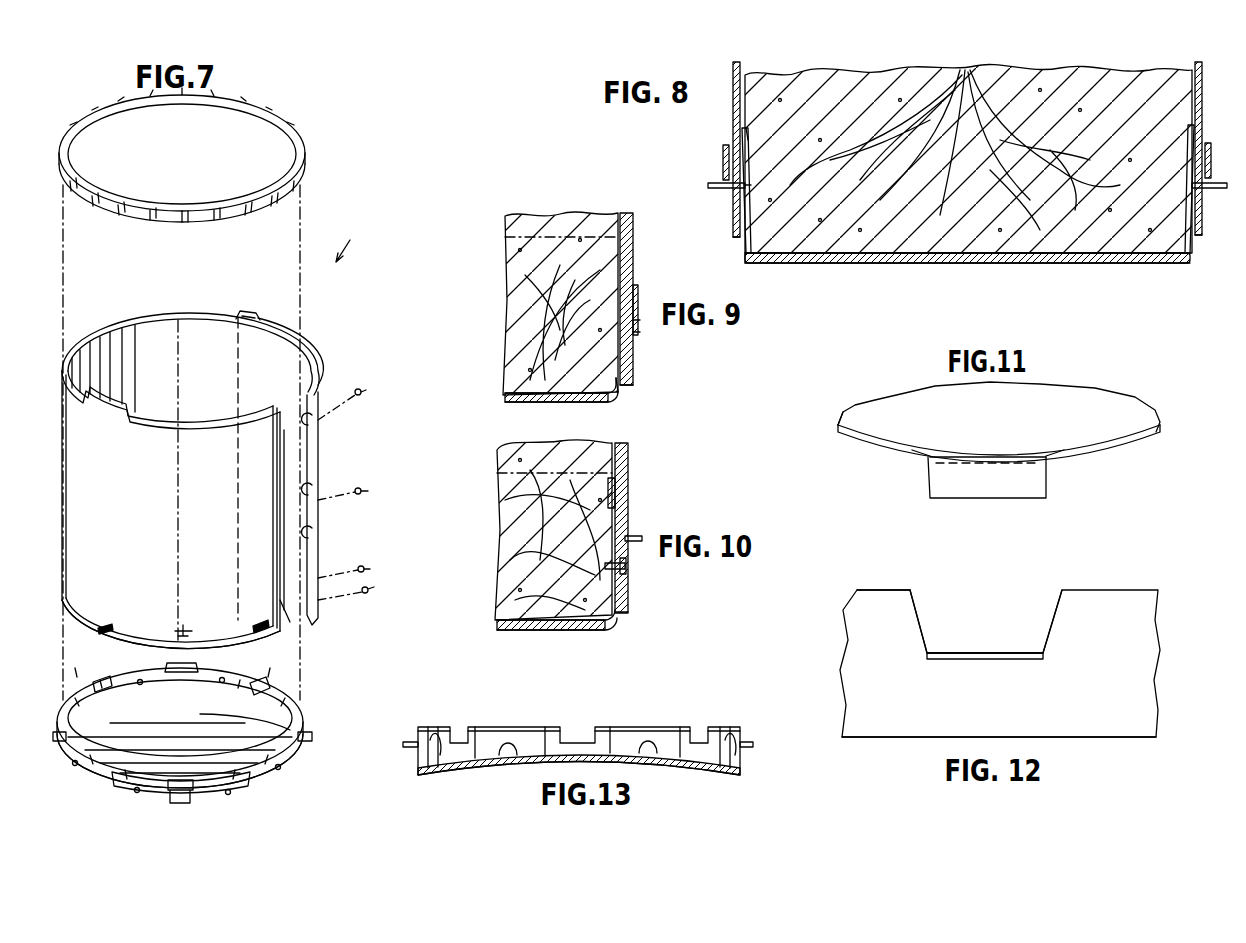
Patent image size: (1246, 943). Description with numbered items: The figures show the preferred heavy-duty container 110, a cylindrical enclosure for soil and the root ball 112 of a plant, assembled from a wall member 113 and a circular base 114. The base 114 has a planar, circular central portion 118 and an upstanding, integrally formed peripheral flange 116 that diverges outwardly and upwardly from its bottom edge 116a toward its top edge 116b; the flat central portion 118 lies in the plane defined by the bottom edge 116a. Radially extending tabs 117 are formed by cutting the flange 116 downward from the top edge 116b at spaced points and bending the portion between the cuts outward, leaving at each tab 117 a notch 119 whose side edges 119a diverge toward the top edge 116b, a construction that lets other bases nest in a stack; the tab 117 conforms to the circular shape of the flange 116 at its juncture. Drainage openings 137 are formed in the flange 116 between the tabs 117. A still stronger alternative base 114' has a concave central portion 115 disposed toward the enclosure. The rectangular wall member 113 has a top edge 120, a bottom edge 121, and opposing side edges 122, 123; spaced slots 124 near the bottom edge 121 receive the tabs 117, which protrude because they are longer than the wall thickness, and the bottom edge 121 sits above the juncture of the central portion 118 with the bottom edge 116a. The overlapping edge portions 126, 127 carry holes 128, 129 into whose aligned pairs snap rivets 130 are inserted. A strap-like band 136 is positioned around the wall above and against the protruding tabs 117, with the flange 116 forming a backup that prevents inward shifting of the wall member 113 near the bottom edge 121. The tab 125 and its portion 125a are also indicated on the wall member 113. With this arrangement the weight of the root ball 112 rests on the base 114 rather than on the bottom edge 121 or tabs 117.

In FIG. 7, the heavy-duty container 110 is at (362, 243).
In FIG. 8, the root ball 112 is at (950, 202).
In FIG. 9, the root ball 112 is at (505, 327).
In FIG. 10, the root ball 112 is at (503, 524).
In FIG. 7, the wall member 113 is at (168, 515).
In FIG. 8, the wall member 113 is at (1200, 70).
In FIG. 7, the base 114 is at (207, 731).
In FIG. 8, the base 114 is at (967, 284).
In FIG. 13, the base 114' is at (578, 722).
In FIG. 13, the concave central portion 115 is at (617, 755).
In FIG. 7, the peripheral flange 116 is at (302, 750).
In FIG. 8, the peripheral flange 116 is at (1190, 265).
In FIG. 11, the peripheral flange 116 is at (1135, 446).
In FIG. 12, the peripheral flange 116 is at (866, 648).
In FIG. 8, the bottom edge 116a is at (745, 264).
In FIG. 12, the bottom edge 116a is at (868, 733).
In FIG. 7, the top edge 116b is at (302, 722).
In FIG. 8, the top edge 116b is at (1190, 125).
In FIG. 11, the top edge 116b is at (848, 437).
In FIG. 12, the top edge 116b is at (880, 590).
In FIG. 7, the tabs 117 is at (275, 780).
In FIG. 8, the tabs 117 is at (712, 190).
In FIG. 10, the tabs 117 is at (638, 538).
In FIG. 11, the tabs 117 is at (991, 490).
In FIG. 12, the tabs 117 is at (990, 652).
In FIG. 7, the central portion 118 is at (175, 732).
In FIG. 8, the central portion 118 is at (940, 264).
In FIG. 11, the central portion 118 is at (1078, 395).
In FIG. 8, the notch 119 is at (764, 151).
In FIG. 11, the notch 119 is at (1015, 450).
In FIG. 12, the notch 119 is at (1013, 592).
In FIG. 11, the side edges 119a is at (1055, 455).
In FIG. 12, the side edges 119a is at (1055, 605).
In FIG. 7, the top edge 120 is at (304, 366).
In FIG. 7, the bottom edge 121 is at (150, 642).
In FIG. 8, the bottom edge 121 is at (1212, 248).
In FIG. 9, the bottom edge 121 is at (630, 385).
In FIG. 10, the bottom edge 121 is at (626, 612).
In FIG. 7, the side edge 122 is at (283, 470).
In FIG. 7, the side edge 123 is at (320, 452).
In FIG. 7, the slots 124 is at (84, 642).
In FIG. 8, the slots 124 is at (750, 186).
In FIG. 7, the notch 125 is at (247, 310).
In FIG. 7, the notch tab 125a is at (253, 320).
In FIG. 7, the edge portion 126 is at (284, 630).
In FIG. 7, the edge portion 127 is at (314, 532).
In FIG. 7, the holes 128 is at (275, 518).
In FIG. 7, the holes 129 is at (312, 488).
In FIG. 7, the snap rivet 130 is at (371, 594).
In FIG. 9, the snap rivet 130 is at (639, 332).
In FIG. 10, the snap rivet 130 is at (626, 568).
In FIG. 7, the strap-like band 136 is at (301, 154).
In FIG. 8, the strap-like band 136 is at (1212, 175).
In FIG. 9, the strap-like band 136 is at (637, 298).
In FIG. 10, the strap-like band 136 is at (628, 512).
In FIG. 7, the drainage openings 137 is at (140, 684).
In FIG. 9, the drainage openings 137 is at (619, 380).